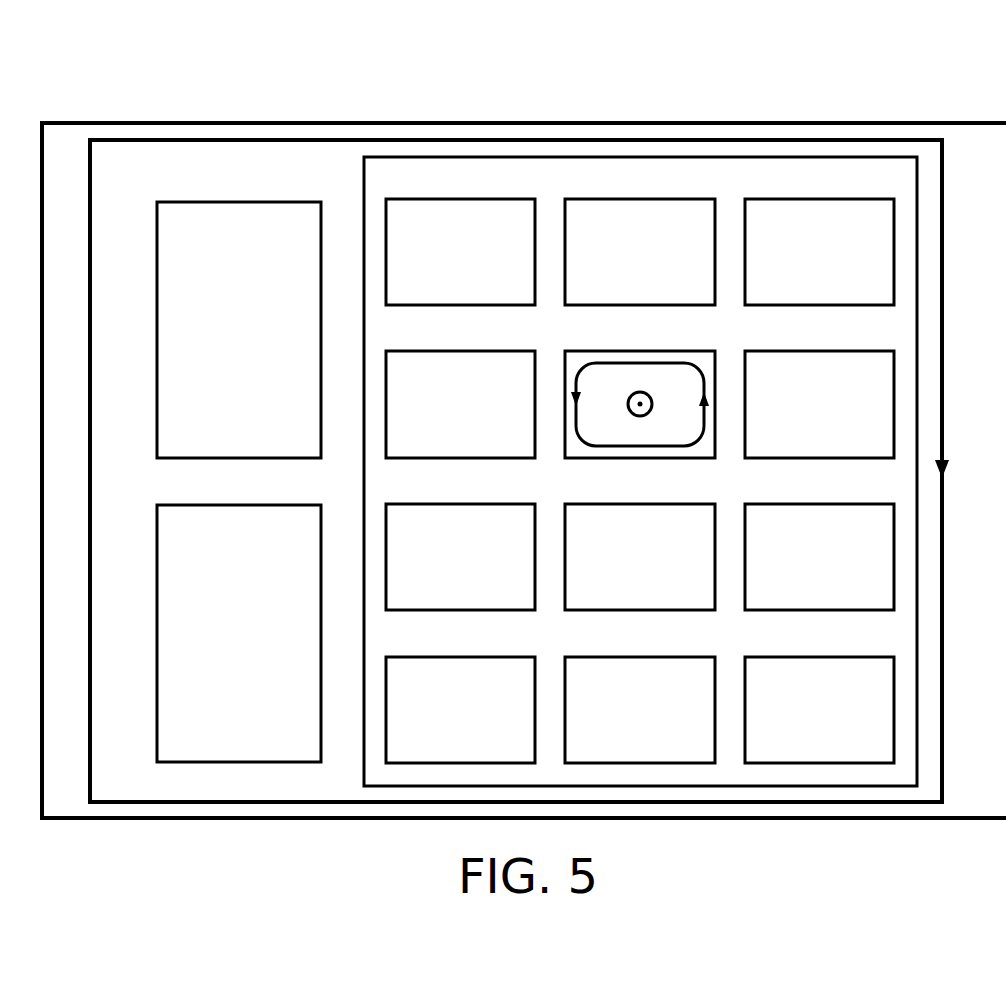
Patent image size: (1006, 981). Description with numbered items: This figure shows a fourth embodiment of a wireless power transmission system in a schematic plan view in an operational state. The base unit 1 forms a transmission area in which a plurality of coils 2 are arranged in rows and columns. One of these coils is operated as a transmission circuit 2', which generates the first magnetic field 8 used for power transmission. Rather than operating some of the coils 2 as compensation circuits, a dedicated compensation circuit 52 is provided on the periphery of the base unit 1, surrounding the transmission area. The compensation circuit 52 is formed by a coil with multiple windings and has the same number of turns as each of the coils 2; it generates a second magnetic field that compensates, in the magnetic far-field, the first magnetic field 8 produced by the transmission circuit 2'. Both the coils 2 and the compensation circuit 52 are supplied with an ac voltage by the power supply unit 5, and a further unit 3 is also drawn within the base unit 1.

The base unit 1 is at (68, 100).
The coil 2 is at (640, 471).
The transmission circuit 2' is at (644, 388).
The control unit 3 is at (157, 634).
The power supply unit 5 is at (157, 328).
The first magnetic field 8 is at (649, 411).
The compensation circuit 52 is at (944, 349).